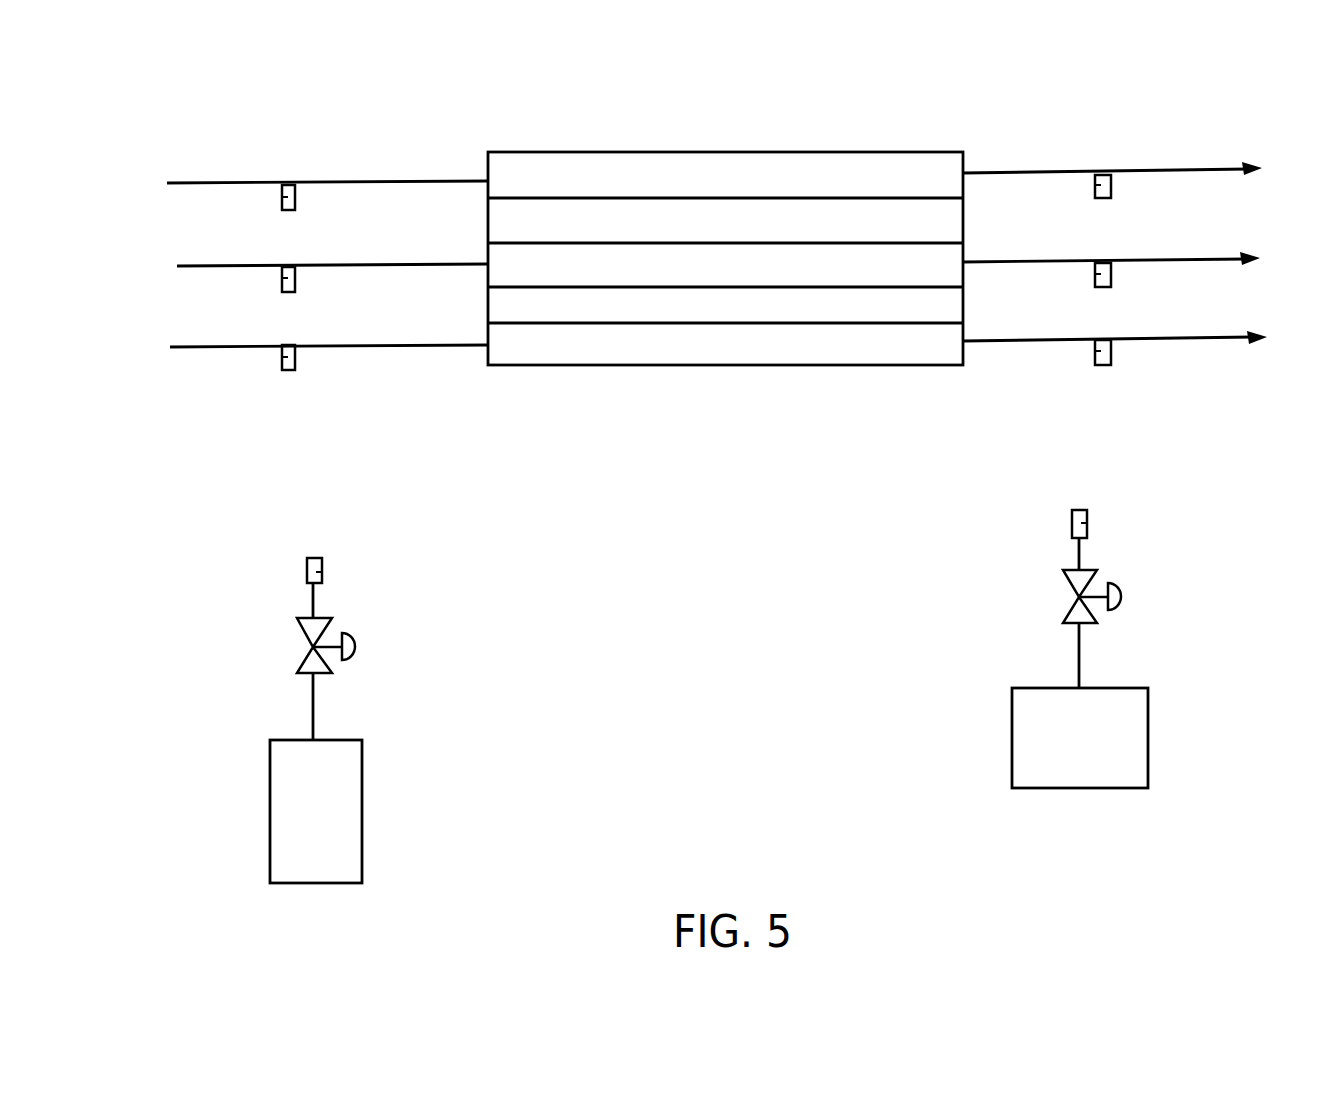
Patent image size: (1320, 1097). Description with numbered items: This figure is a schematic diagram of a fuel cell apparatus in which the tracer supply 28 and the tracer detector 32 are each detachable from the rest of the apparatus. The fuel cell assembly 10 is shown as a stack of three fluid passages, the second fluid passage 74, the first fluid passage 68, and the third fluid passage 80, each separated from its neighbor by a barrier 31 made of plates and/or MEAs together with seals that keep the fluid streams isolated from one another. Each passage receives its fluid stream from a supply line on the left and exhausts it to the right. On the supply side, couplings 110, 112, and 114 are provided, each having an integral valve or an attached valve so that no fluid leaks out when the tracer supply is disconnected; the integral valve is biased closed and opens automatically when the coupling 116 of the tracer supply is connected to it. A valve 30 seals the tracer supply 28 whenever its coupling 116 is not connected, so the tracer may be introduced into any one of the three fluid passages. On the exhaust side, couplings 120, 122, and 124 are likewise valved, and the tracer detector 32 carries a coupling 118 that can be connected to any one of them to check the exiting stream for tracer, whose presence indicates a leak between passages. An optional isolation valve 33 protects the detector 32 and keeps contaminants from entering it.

The fuel cell assembly 10 is at (770, 114).
The second fluid passage 74 is at (613, 190).
The barrier 31 is at (702, 235).
The first fluid passage 68 is at (628, 281).
The third fluid passage 80 is at (637, 356).
The coupling 110 is at (283, 196).
The coupling 112 is at (282, 277).
The coupling 114 is at (282, 356).
The coupling 120 is at (1111, 185).
The coupling 122 is at (1111, 273).
The coupling 124 is at (1111, 350).
The coupling 116 is at (322, 572).
The valve 30 is at (332, 628).
The tracer supply 28 is at (338, 811).
The coupling 118 is at (1087, 523).
The isolation valve 33 is at (1097, 578).
The tracer detector 32 is at (1118, 733).